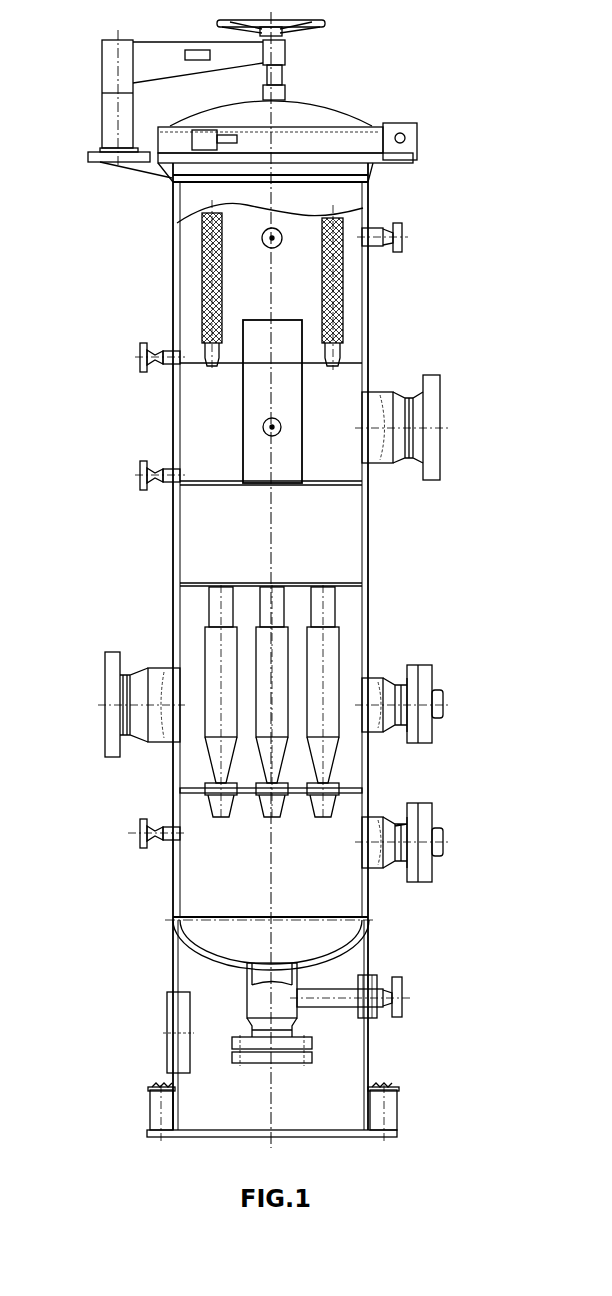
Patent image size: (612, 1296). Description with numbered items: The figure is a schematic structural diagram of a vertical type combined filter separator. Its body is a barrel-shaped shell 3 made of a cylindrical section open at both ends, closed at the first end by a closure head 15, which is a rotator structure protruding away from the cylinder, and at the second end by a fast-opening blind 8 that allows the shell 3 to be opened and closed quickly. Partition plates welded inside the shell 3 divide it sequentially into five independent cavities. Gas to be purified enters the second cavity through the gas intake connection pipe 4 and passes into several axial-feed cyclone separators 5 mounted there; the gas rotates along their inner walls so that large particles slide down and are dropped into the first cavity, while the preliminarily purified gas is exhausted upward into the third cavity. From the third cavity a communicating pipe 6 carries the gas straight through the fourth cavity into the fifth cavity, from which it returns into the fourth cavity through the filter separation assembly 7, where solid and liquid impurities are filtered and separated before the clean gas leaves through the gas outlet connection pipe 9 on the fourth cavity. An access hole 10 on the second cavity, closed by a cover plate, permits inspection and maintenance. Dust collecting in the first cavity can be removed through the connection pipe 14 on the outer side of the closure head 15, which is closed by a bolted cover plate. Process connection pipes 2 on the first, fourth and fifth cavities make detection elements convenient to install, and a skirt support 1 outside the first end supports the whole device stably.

The skirt support 1 is at (155, 1085).
The process connection pipe 2 is at (403, 235).
The shell 3 is at (175, 805).
The gas intake connection pipe 4 is at (105, 678).
The cyclone separator 5 is at (205, 630).
The communicating pipe 6 is at (240, 448).
The filter separation assembly 7 is at (200, 292).
The fast-opening blind 8 is at (107, 107).
The gas outlet connection pipe 9 is at (438, 393).
The access hole 10 is at (433, 683).
The connection pipe 14 is at (262, 1007).
The closure head 15 is at (360, 942).